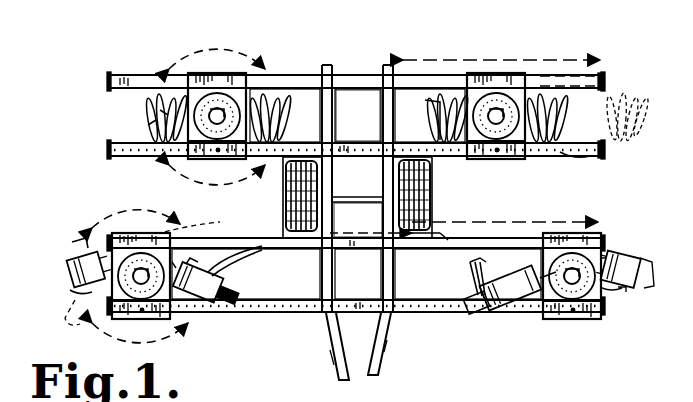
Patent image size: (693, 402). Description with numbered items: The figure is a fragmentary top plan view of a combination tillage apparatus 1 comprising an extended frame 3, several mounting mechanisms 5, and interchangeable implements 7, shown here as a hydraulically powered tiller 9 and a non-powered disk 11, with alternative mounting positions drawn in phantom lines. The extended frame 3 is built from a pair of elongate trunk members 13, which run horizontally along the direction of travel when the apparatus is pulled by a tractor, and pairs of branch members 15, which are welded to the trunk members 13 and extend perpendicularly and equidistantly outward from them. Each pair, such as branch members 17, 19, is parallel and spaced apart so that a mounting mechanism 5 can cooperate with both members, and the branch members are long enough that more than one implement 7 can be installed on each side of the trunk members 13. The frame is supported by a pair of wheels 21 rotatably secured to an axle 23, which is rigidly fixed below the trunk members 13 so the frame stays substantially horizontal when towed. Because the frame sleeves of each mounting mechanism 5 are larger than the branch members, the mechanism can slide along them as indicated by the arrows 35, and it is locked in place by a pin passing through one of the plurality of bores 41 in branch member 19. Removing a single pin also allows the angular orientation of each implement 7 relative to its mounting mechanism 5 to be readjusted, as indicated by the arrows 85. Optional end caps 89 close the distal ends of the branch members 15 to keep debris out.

The combination tillage apparatus 1 is at (276, 345).
The extended frame 3 is at (437, 312).
The mounting mechanism 5 is at (200, 162).
The interchangeable implement 7 is at (640, 272).
The tiller 9 is at (634, 242).
The disk 11 is at (426, 115).
The trunk members 13 is at (382, 113).
The branch members 15 is at (99, 83).
The branch member 17 is at (267, 238).
The branch member 19 is at (263, 312).
The wheels 21 is at (286, 206).
The axle 23 is at (371, 204).
The arrows 35 is at (553, 60).
The bores 41 is at (592, 158).
The arrows 85 is at (180, 222).
The end caps 89 is at (607, 78).